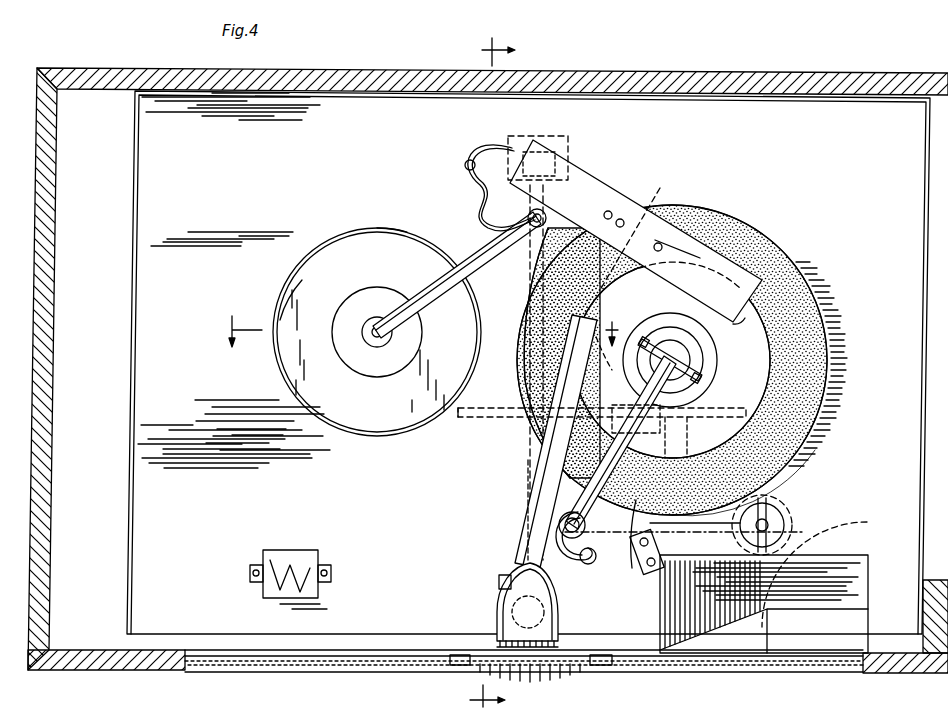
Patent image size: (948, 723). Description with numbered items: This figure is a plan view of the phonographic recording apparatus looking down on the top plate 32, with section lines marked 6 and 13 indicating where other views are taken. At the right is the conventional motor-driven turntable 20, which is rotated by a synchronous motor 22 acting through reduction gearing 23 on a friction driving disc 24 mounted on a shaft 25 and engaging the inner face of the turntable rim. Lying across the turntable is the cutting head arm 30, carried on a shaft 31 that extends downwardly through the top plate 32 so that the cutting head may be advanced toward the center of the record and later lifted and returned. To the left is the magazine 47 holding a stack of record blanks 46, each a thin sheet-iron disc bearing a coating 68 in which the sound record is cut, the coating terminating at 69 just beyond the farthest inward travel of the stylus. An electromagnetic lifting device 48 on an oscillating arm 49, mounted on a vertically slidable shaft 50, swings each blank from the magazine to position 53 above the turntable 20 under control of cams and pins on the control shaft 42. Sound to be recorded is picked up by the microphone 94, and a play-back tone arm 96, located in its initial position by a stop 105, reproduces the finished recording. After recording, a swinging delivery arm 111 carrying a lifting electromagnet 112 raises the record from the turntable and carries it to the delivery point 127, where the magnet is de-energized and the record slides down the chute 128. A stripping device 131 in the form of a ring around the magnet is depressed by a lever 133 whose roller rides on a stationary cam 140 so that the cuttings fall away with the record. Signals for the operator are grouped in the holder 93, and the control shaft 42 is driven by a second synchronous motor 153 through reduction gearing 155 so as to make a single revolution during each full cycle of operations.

The section line 6- 6 is at (492, 376).
The section line 13- 13 is at (421, 334).
The turntable 20 is at (802, 288).
The synchronous motor 22 is at (636, 234).
The reduction gearing 23 is at (615, 322).
The friction driving disc 24 is at (520, 386).
The shaft 25 is at (547, 353).
The cutting head arm 30 is at (658, 240).
The shaft 31 is at (558, 152).
The top plate 32 is at (136, 522).
The control shaft 42 is at (522, 484).
The record blanks 46 is at (325, 270).
The magazine 47 is at (375, 232).
The electromagnetic lifting device 48 is at (383, 318).
The oscillating arm 49 is at (470, 252).
The vertically slidable shaft 50 is at (578, 200).
The position above the turntable 53 is at (558, 242).
The coating 68 is at (300, 292).
The termination of the coating 69 is at (372, 300).
The holder 93 is at (288, 562).
The microphone 94 is at (505, 607).
The tone arm 96 is at (548, 476).
The stop 105 is at (500, 582).
The swinging arm 111 is at (642, 403).
The electromagnet 112 is at (700, 355).
The delivery point 127 is at (808, 625).
The chute 128 is at (868, 590).
The stripping device 131 is at (705, 366).
The lever 133 is at (680, 428).
The stationary cam 140 is at (640, 565).
The synchronous motor 153 is at (816, 450).
The reduction gearing 155 is at (500, 430).